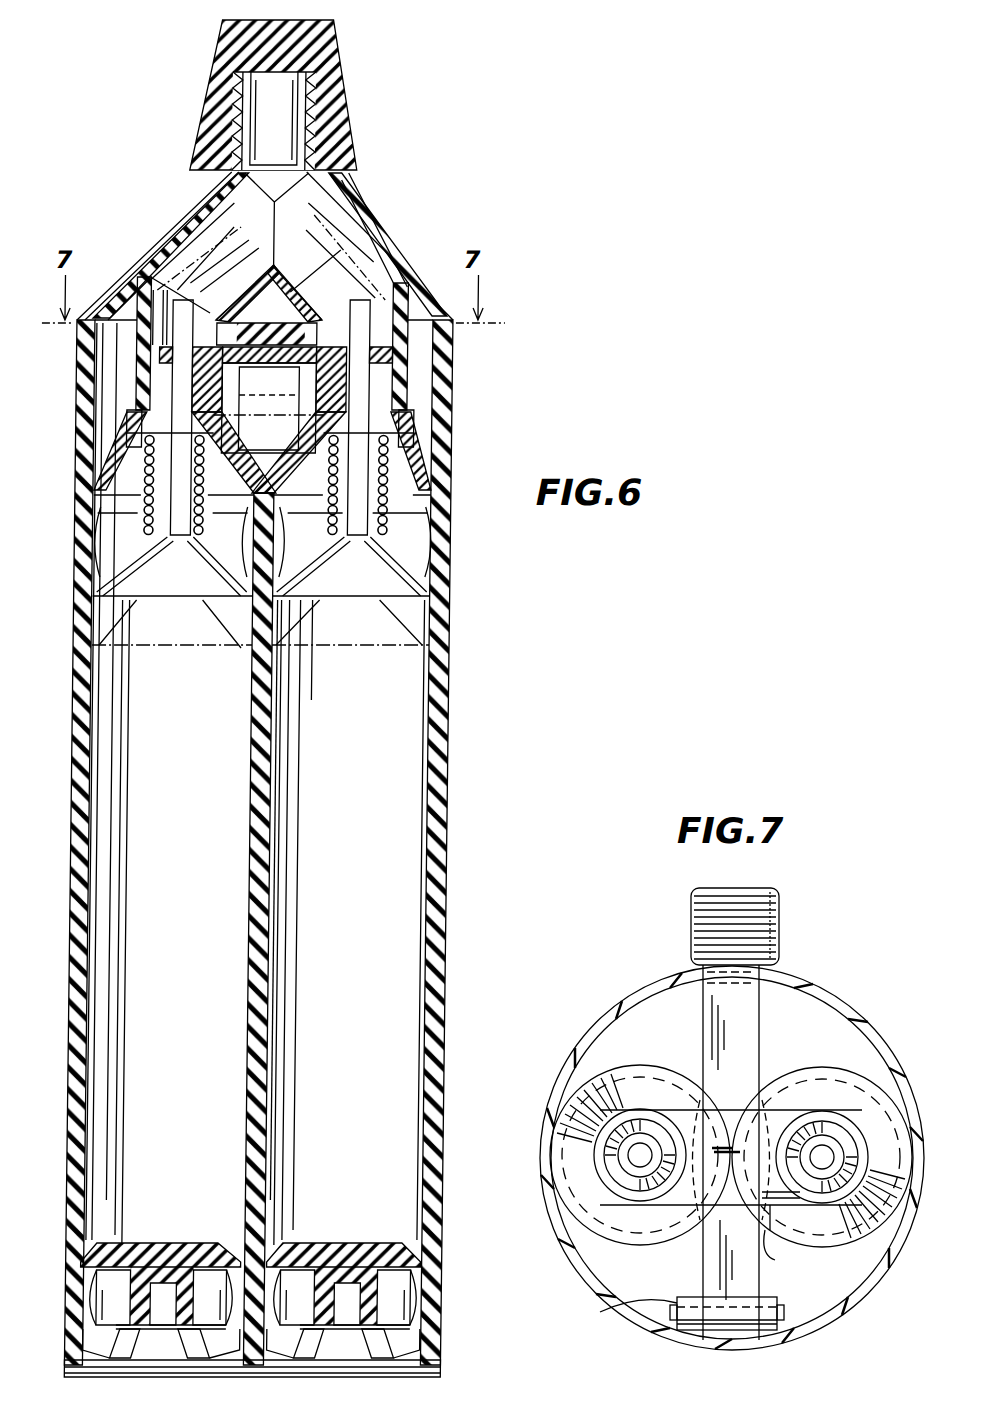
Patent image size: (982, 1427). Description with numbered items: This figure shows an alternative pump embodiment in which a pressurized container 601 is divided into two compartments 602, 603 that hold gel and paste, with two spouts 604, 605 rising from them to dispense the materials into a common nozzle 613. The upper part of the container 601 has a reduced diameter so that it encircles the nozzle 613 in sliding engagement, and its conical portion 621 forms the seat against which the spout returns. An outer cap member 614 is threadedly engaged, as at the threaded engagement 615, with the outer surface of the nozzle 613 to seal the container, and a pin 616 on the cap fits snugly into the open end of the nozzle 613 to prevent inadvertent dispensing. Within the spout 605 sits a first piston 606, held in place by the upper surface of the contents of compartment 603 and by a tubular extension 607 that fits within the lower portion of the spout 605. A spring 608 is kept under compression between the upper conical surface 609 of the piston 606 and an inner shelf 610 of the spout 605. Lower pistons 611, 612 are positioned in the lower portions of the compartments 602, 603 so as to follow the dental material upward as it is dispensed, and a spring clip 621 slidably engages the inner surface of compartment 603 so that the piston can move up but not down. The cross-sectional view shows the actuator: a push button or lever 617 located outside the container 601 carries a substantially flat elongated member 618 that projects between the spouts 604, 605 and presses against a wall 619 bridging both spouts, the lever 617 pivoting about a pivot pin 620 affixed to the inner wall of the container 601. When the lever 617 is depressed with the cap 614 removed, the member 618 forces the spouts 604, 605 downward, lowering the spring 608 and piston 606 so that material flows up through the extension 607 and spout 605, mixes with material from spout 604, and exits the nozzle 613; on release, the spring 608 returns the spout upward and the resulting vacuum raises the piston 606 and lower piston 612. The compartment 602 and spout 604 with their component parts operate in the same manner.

In FIG. 6, the pressurized container 601 is at (453, 697).
In FIG. 7, the pressurized container 601 is at (563, 1070).
In FIG. 6, the compartment 602 is at (190, 1037).
In FIG. 7, the compartment 602 is at (565, 1237).
In FIG. 6, the compartment 603 is at (372, 1037).
In FIG. 7, the compartment 603 is at (833, 1292).
In FIG. 6, the spout 604 is at (203, 213).
In FIG. 7, the spout 604 is at (598, 1141).
In FIG. 6, the spout 605 is at (305, 213).
In FIG. 7, the spout 605 is at (835, 1127).
In FIG. 6, the first piston 606 is at (427, 541).
In FIG. 6, the tubular extension 607 is at (343, 366).
In FIG. 7, the tubular extension 607 is at (815, 1102).
In FIG. 6, the spring 608 is at (400, 425).
In FIG. 6, the upper conical surface 609 is at (405, 568).
In FIG. 6, the inner shelf 610 is at (378, 428).
In FIG. 6, the lower piston 611 is at (188, 1247).
In FIG. 6, the lower piston 612 is at (368, 1247).
In FIG. 6, the nozzle 613 is at (345, 130).
In FIG. 6, the outer cap member 614 is at (337, 32).
In FIG. 6, the threaded engagement 615 is at (203, 96).
In FIG. 6, the pin 616 is at (273, 95).
In FIG. 7, the push button 617 is at (695, 908).
In FIG. 6, the flat elongated member 618 is at (304, 322).
In FIG. 7, the flat elongated member 618 is at (718, 1073).
In FIG. 6, the wall 619 is at (300, 346).
In FIG. 7, the wall 619 is at (772, 1245).
In FIG. 7, the pivot pin 620 is at (618, 1306).
In FIG. 6, the conical portion 621 is at (384, 239).